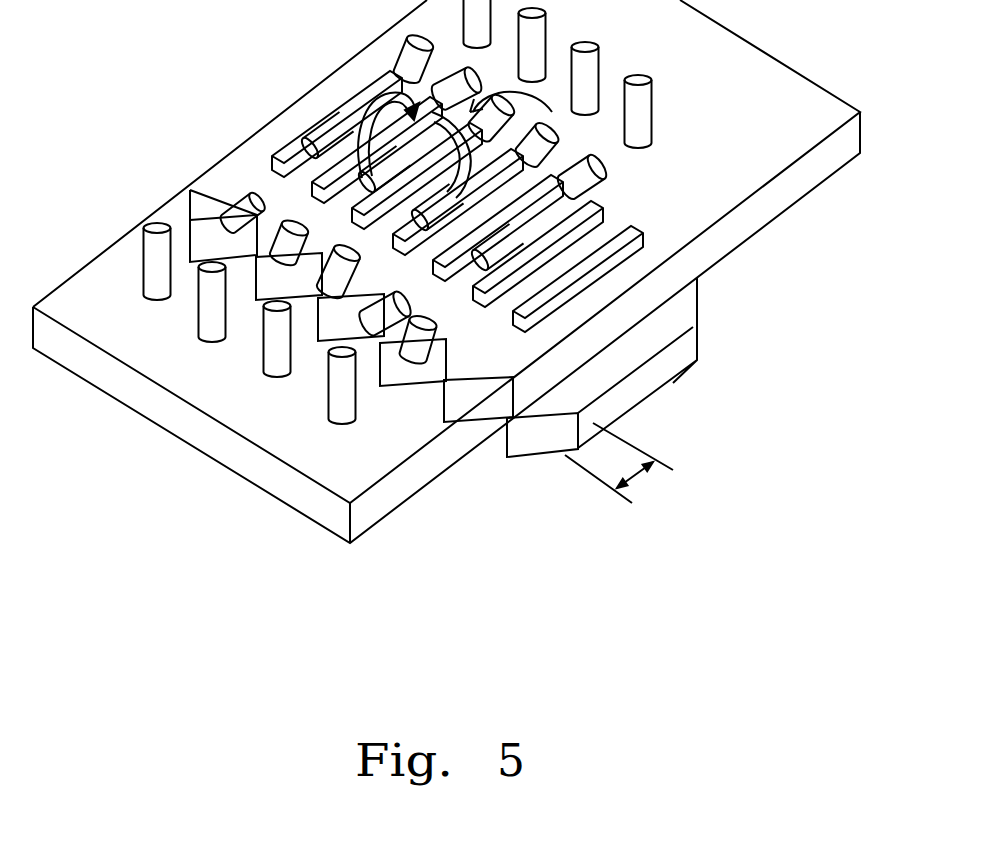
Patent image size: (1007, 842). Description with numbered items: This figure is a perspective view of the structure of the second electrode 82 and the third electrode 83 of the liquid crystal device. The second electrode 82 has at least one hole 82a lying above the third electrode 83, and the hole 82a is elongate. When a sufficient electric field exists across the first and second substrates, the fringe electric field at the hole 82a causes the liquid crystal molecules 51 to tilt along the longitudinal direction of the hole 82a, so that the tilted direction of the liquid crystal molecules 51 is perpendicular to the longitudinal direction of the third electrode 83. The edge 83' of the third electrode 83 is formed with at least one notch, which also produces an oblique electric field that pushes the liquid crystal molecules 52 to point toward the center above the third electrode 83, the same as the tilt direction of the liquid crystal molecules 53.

The liquid crystal molecules 51 is at (313, 130).
The liquid crystal molecules 52 is at (240, 205).
The liquid crystal molecules 53 is at (157, 258).
The second electrode 82 is at (275, 420).
The hole 82a is at (622, 292).
The third electrode 83 is at (690, 366).
The edge 83' is at (630, 472).